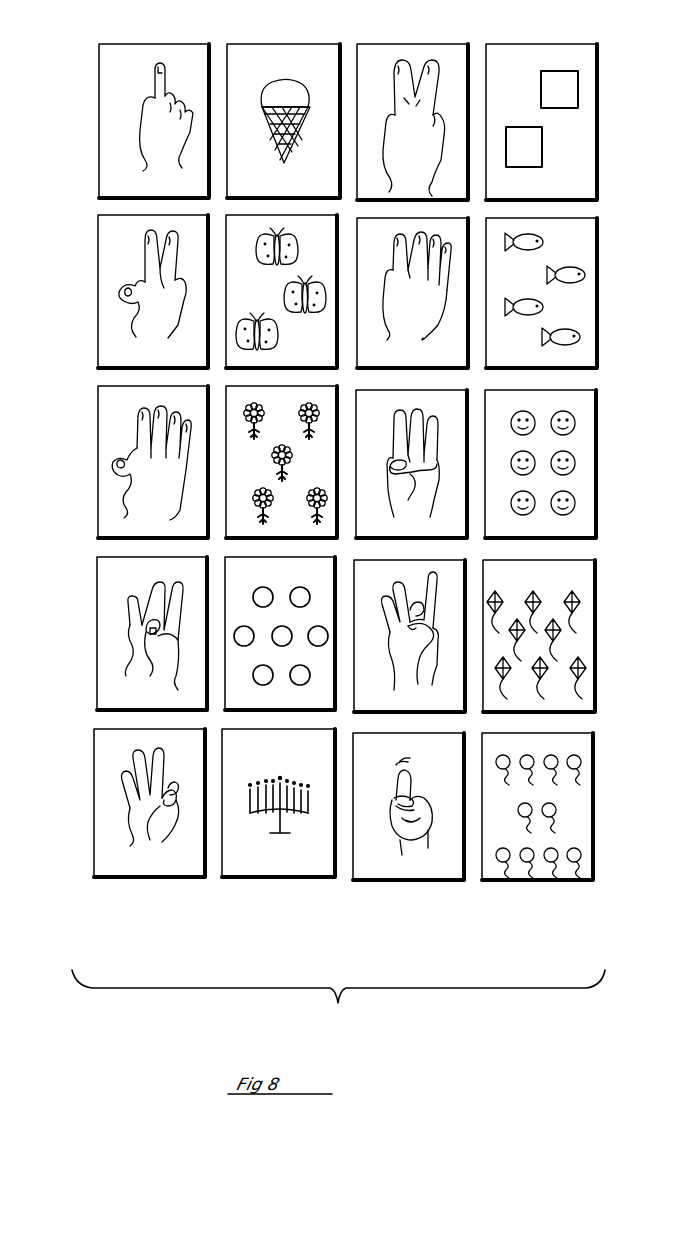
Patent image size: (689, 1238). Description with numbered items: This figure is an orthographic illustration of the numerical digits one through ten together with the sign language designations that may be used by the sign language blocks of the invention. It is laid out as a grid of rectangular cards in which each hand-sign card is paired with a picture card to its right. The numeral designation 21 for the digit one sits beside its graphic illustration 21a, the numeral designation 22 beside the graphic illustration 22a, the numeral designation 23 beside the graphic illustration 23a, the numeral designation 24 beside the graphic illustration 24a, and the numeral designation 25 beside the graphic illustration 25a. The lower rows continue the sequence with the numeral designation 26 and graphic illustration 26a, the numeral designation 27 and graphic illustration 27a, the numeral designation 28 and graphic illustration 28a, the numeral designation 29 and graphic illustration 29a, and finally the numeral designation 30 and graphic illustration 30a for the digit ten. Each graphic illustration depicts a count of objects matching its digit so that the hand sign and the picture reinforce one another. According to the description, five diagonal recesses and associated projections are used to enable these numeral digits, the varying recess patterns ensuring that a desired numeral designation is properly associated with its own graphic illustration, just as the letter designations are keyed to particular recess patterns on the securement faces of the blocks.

The numeral designation 21 is at (172, 53).
The graphic illustration 21a is at (325, 32).
The numeral designation 22 is at (429, 53).
The graphic illustration 22a is at (563, 53).
The numeral designation 23 is at (100, 243).
The graphic illustration 23a is at (376, 226).
The numeral designation 24 is at (452, 226).
The graphic illustration 24a is at (653, 226).
The numeral designation 25 is at (100, 404).
The graphic illustration 25a is at (379, 396).
The numeral designation 26 is at (460, 398).
The graphic illustration 26a is at (651, 406).
The numeral designation 27 is at (100, 574).
The graphic illustration 27a is at (379, 566).
The numeral designation 28 is at (455, 568).
The graphic illustration 28a is at (651, 576).
The numeral designation 29 is at (98, 745).
The graphic illustration 29a is at (379, 736).
The numeral designation 30 is at (455, 740).
The graphic illustration 30a is at (649, 736).